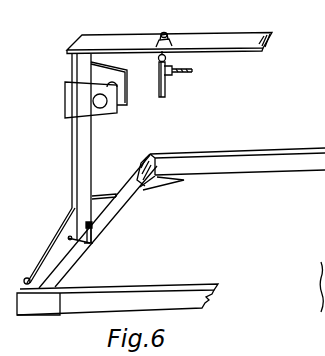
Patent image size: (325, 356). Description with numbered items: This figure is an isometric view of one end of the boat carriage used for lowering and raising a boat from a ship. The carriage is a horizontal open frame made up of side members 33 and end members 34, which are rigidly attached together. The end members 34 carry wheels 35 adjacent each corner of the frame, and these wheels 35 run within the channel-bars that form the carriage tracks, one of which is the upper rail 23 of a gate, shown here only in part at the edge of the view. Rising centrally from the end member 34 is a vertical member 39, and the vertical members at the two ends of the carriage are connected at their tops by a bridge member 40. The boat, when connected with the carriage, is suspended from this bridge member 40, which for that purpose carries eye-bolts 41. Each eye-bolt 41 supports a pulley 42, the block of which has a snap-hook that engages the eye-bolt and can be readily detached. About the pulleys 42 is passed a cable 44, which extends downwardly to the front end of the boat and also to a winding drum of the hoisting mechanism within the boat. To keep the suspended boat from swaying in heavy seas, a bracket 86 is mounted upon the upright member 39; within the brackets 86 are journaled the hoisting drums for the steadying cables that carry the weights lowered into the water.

The upper rail 23 is at (320, 294).
The side members 33 is at (265, 169).
The end members 34 is at (108, 218).
The wheels 35 is at (142, 160).
The vertical members 39 is at (82, 160).
The bridge member 40 is at (259, 35).
The eye-bolts 41 is at (170, 37).
The pulley 42 is at (172, 72).
The cable 44 is at (165, 88).
The brackets 86 is at (76, 92).